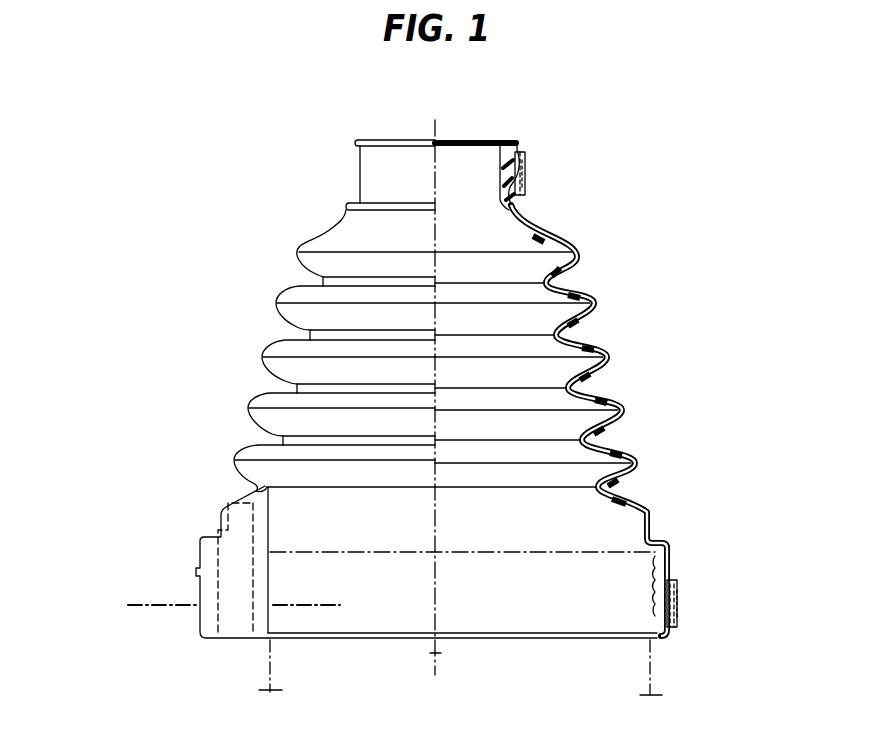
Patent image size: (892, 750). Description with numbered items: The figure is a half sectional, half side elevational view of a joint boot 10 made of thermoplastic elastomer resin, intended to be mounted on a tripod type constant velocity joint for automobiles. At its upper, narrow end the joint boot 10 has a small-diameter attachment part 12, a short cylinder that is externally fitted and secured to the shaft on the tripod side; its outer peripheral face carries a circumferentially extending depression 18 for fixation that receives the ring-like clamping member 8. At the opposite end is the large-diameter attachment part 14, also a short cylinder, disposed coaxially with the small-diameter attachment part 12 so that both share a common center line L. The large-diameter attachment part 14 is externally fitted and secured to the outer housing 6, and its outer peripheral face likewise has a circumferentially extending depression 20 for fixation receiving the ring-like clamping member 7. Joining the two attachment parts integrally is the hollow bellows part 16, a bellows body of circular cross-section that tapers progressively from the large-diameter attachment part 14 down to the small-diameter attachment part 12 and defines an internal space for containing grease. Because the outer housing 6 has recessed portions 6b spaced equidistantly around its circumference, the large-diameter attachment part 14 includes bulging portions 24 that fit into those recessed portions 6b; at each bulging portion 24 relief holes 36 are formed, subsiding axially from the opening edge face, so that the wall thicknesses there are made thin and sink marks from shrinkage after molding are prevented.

The joint boot 10 is at (452, 100).
The depression for fixation 18 is at (360, 165).
The small-diameter attachment part 12 is at (529, 144).
The ring-like clamping member 8 is at (528, 187).
The bellows part 16 is at (609, 341).
The large-diameter attachment part 14 is at (680, 539).
The depression for fixation 20 is at (674, 583).
The ring-like clamping member 7 is at (678, 613).
The bulging portion 24 is at (180, 621).
The relief hole 36 is at (240, 598).
The outer housing 6 is at (650, 672).
The recessed portion 6b is at (272, 672).
The center line L is at (438, 654).